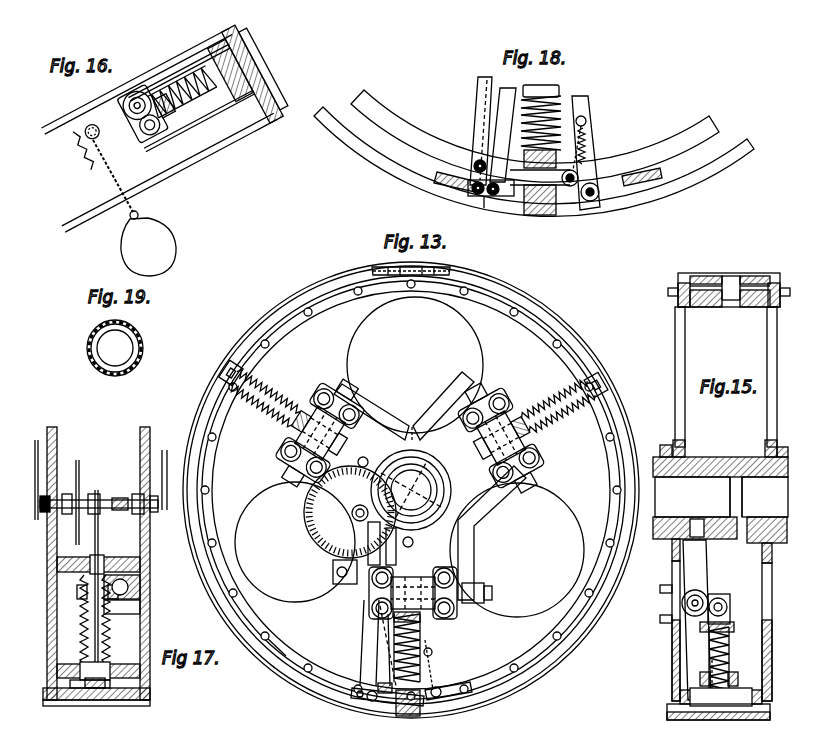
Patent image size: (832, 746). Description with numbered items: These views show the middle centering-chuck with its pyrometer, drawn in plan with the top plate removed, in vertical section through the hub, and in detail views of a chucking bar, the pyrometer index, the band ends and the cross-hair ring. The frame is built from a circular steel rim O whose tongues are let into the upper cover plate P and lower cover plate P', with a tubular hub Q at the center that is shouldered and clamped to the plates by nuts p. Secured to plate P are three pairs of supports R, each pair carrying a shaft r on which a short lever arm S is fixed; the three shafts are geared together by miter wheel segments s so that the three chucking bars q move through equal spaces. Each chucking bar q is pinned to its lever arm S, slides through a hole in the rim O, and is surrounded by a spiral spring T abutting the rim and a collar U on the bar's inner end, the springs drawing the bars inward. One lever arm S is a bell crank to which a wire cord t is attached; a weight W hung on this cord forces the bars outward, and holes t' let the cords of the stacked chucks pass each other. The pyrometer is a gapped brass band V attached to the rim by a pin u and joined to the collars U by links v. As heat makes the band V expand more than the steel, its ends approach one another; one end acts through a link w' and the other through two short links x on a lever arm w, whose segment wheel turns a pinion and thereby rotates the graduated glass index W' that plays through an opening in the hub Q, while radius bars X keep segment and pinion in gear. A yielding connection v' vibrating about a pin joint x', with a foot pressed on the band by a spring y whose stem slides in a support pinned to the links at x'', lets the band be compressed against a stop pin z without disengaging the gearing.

In FIG. 18, the circular steel rim O is at (535, 136).
In FIG. 13, the circular steel rim O is at (213, 460).
In FIG. 17, the circular steel rim O is at (98, 671).
In FIG. 16, the pyrometer band V is at (239, 66).
In FIG. 13, the pyrometer band V is at (411, 490).
In FIG. 17, the pyrometer band V is at (96, 703).
In FIG. 15, the pyrometer band V is at (729, 280).
In FIG. 18, the yielding connection V' is at (534, 161).
In FIG. 13, the yielding connection V' is at (274, 665).
In FIG. 13, the pin u is at (416, 268).
In FIG. 15, the pin u is at (731, 288).
In FIG. 16, the chucking bar q is at (266, 57).
In FIG. 18, the chucking bar q is at (540, 192).
In FIG. 13, the chucking bar q is at (419, 377).
In FIG. 13, the lower rim bracket q' is at (405, 709).
In FIG. 16, the upper circular cover plate P is at (133, 74).
In FIG. 13, the upper circular cover plate P is at (409, 473).
In FIG. 17, the upper circular cover plate P is at (38, 563).
In FIG. 16, the lower circular cover plate P' is at (175, 183).
In FIG. 17, the lower circular cover plate P' is at (155, 563).
In FIG. 15, the lower circular cover plate P' is at (782, 377).
In FIG. 18, the spiral spring y is at (583, 148).
In FIG. 13, the spiral spring y is at (417, 490).
In FIG. 15, the spiral spring y is at (692, 497).
In FIG. 16, the miter wheel segment s is at (96, 151).
In FIG. 13, the miter wheel segment s is at (430, 486).
In FIG. 15, the miter wheel segment s is at (697, 620).
In FIG. 13, the short lever arm S is at (410, 507).
In FIG. 15, the short lever arm S is at (724, 600).
In FIG. 16, the supports R is at (141, 114).
In FIG. 13, the supports R is at (410, 500).
In FIG. 15, the supports R is at (700, 628).
In FIG. 16, the shaft r is at (176, 66).
In FIG. 13, the shaft r is at (366, 372).
In FIG. 15, the shaft r is at (684, 604).
In FIG. 16, the spiral spring T is at (176, 111).
In FIG. 18, the spiral spring T is at (541, 117).
In FIG. 13, the spiral spring T is at (411, 525).
In FIG. 17, the spiral spring T is at (122, 618).
In FIG. 15, the spiral spring T is at (730, 640).
In FIG. 16, the collar U is at (155, 133).
In FIG. 13, the collar U is at (290, 437).
In FIG. 17, the collar U is at (78, 612).
In FIG. 16, the wire cord t is at (115, 179).
In FIG. 13, the wire cord t is at (410, 459).
In FIG. 13, the holes t' is at (391, 498).
In FIG. 17, the holes t' is at (107, 502).
In FIG. 18, the lever arm w is at (485, 130).
In FIG. 13, the lever arm w is at (382, 543).
In FIG. 17, the lever arm w is at (103, 581).
In FIG. 18, the link w' is at (496, 179).
In FIG. 13, the link w' is at (386, 694).
In FIG. 17, the link w' is at (95, 702).
In FIG. 15, the link w' is at (699, 679).
In FIG. 13, the worm gear w'' is at (360, 502).
In FIG. 17, the worm gear w'' is at (99, 496).
In FIG. 16, the weight W is at (148, 247).
In FIG. 17, the weight W is at (98, 549).
In FIG. 13, the circular index W' is at (350, 512).
In FIG. 13, the pin z is at (337, 572).
In FIG. 18, the radius bars X is at (482, 57).
In FIG. 13, the radius bars X is at (363, 634).
In FIG. 17, the radius bars X is at (80, 590).
In FIG. 16, the links v is at (203, 129).
In FIG. 18, the links v is at (545, 146).
In FIG. 13, the links v is at (389, 650).
In FIG. 15, the links v is at (720, 672).
In FIG. 18, the short links x is at (484, 208).
In FIG. 13, the short links x is at (387, 706).
In FIG. 17, the short links x is at (90, 697).
In FIG. 18, the pin joint x' is at (580, 197).
In FIG. 13, the pin joint x' is at (448, 704).
In FIG. 18, the pin joint x'' is at (590, 120).
In FIG. 13, the pin joint x'' is at (439, 650).
In FIG. 13, the adjusting rod y' is at (443, 665).
In FIG. 15, the adjusting rod y' is at (739, 679).
In FIG. 15, the tubular hub Q is at (732, 457).
In FIG. 15, the nuts p is at (658, 536).
In FIG. 15, the yielding connection v' is at (718, 721).